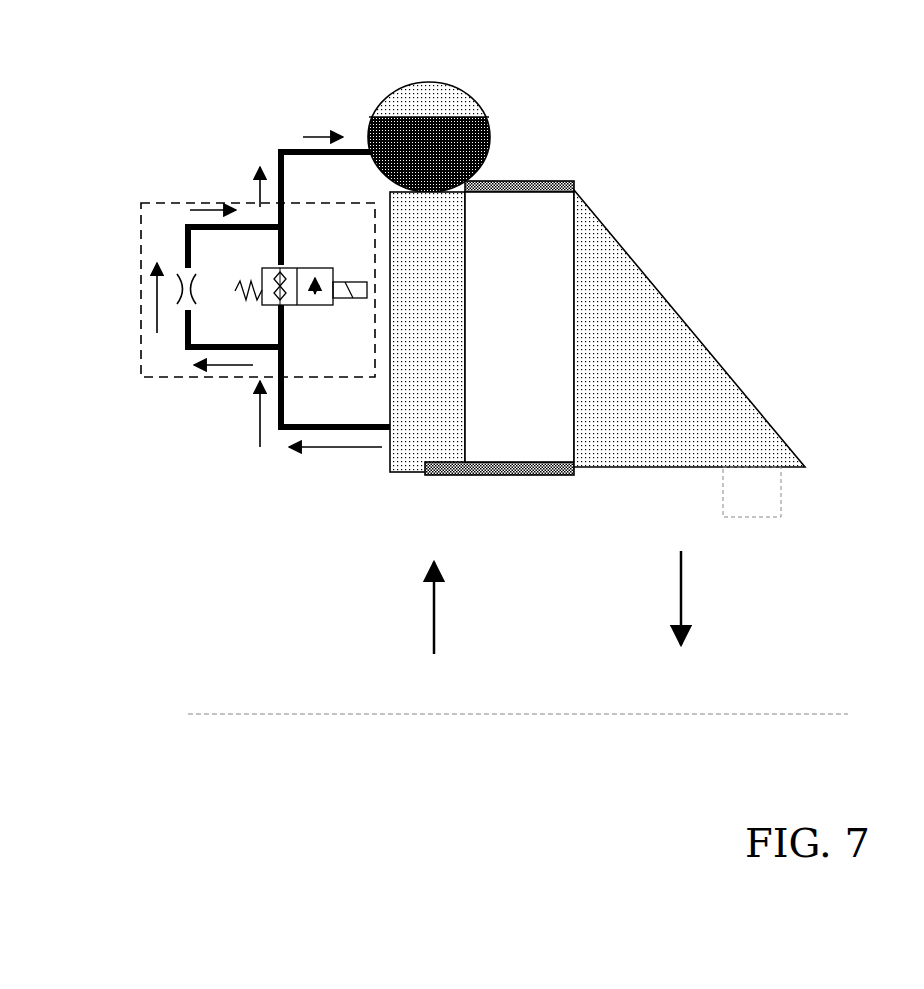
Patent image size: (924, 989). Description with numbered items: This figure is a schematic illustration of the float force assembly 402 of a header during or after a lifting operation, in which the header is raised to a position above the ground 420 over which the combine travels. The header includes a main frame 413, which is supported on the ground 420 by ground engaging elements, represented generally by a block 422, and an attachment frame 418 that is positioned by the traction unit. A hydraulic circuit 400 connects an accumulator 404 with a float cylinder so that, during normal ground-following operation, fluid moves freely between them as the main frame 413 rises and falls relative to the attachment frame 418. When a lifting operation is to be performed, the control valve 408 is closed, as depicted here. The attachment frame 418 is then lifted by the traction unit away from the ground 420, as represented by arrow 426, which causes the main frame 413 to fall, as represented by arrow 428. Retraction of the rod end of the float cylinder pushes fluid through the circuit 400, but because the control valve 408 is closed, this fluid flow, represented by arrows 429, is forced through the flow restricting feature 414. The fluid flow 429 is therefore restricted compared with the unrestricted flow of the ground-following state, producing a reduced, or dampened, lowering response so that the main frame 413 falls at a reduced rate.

The hydraulic circuit 400 is at (165, 203).
The float force assembly 402 is at (660, 97).
The accumulator 404 is at (455, 88).
The control valve 408 is at (286, 306).
The main frame 413 is at (612, 235).
The flow restricting feature 414 is at (178, 272).
The attachment frame 418 is at (465, 240).
The ground 420 is at (597, 714).
The ground engaging element 422 is at (771, 491).
The arrow 426 is at (434, 622).
The arrow 428 is at (681, 590).
The arrows 429 is at (310, 452).